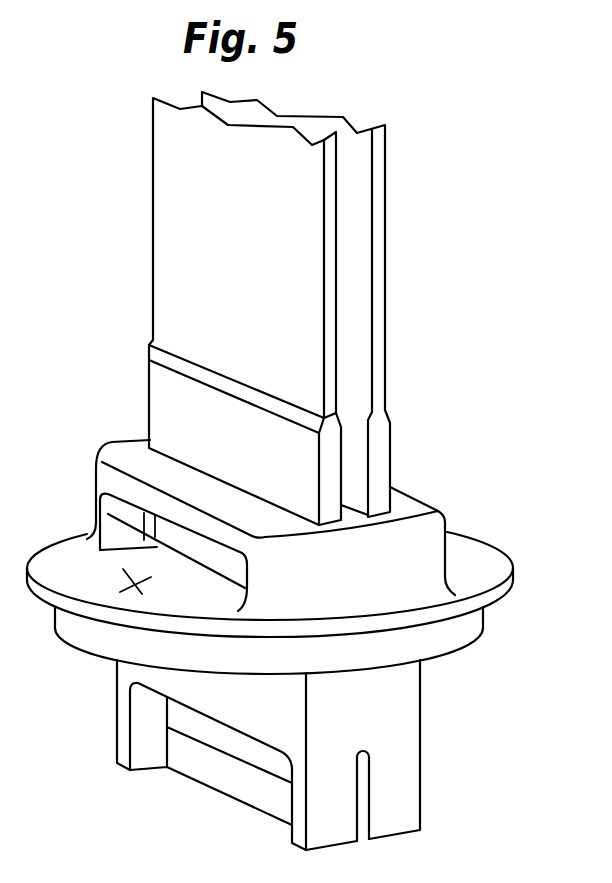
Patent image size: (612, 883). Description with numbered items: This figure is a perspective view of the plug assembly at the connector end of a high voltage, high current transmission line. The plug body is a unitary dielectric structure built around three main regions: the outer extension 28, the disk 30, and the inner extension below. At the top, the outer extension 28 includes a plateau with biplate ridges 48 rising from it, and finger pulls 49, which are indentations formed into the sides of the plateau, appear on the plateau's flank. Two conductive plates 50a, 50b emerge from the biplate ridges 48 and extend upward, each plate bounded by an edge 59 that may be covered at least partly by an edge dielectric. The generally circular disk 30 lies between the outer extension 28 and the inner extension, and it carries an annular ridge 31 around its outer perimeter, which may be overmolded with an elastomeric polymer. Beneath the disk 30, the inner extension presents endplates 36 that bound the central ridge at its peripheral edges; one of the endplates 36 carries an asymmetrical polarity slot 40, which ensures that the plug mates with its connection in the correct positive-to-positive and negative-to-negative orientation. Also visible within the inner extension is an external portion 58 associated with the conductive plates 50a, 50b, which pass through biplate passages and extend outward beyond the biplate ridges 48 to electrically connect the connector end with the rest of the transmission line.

The conductive plate 50a is at (278, 244).
The conductive plate 50b is at (355, 203).
The edge 59 is at (333, 155).
The biplate ridge 48 is at (160, 396).
The outer extension 28 is at (390, 462).
The finger pull 49 is at (170, 537).
The disk 30 is at (477, 545).
The annular ridge 31 is at (500, 583).
The endplate 36 is at (400, 727).
The external portion 58 is at (228, 738).
The asymmetrical polarity slot 40 is at (360, 804).